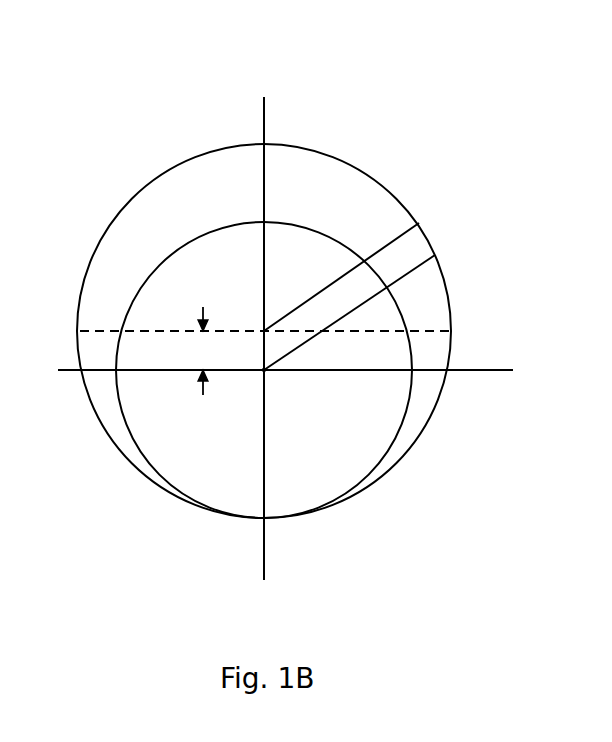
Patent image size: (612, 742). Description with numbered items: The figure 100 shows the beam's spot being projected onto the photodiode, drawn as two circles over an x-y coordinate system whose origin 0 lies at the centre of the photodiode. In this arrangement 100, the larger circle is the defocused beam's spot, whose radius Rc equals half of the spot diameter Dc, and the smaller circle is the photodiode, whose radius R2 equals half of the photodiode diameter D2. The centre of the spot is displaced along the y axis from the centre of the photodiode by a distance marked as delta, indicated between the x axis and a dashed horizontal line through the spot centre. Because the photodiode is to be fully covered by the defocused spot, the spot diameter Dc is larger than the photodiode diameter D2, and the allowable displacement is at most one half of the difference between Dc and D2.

The beam spot and photodiode geometry diagram 100 is at (107, 94).
The origin of coordinate system 0 is at (272, 382).
The beam's spot diameter Dc is at (340, 192).
The photodiode diameter D2 is at (332, 480).
The defocused spot radius Rc is at (341, 277).
The photodiode radius R2 is at (349, 312).